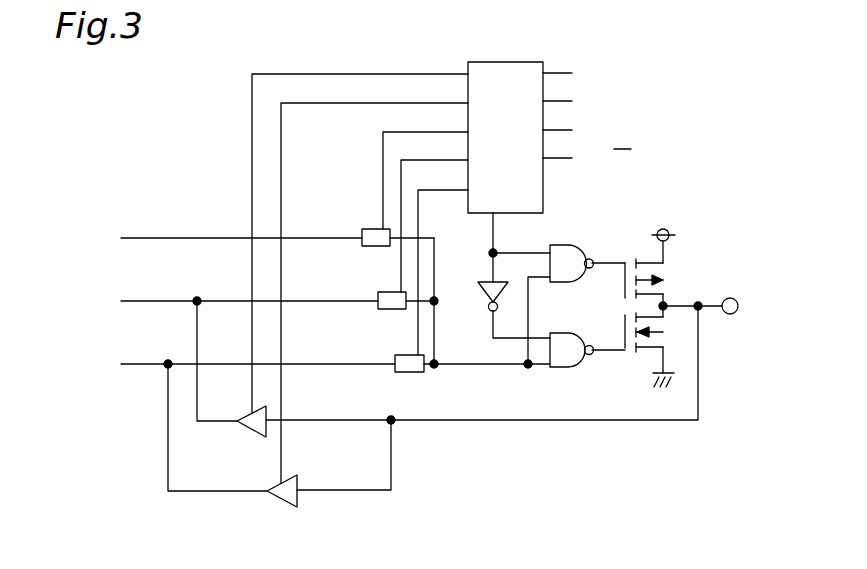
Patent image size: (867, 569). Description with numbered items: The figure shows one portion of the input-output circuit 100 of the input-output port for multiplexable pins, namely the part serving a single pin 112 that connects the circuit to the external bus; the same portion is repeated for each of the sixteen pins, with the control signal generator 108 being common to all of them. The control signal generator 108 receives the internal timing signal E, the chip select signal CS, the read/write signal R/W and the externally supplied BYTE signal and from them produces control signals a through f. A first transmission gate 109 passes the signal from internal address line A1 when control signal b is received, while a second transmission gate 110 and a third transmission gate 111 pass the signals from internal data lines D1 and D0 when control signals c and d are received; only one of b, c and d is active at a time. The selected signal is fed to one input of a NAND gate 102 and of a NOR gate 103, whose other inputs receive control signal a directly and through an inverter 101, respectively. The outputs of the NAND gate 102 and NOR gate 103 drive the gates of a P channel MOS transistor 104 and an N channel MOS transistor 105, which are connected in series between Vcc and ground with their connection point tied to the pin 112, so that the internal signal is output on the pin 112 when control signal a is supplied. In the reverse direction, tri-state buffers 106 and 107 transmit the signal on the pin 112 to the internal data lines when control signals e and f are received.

The input-output circuit 100 is at (287, 61).
The inverter 101 is at (490, 291).
The NAND gate 102 is at (581, 248).
The NOR gate 103 is at (568, 368).
The P channel MOS transistor 104 is at (667, 273).
The N channel MOS transistor 105 is at (667, 338).
The tri-state buffer 106 is at (252, 436).
The tri-state buffer 107 is at (282, 506).
The control signal generator 108 is at (496, 62).
The first transmission gate 109 is at (362, 232).
The second transmission gate 110 is at (378, 295).
The third transmission gate 111 is at (396, 357).
The pin 112 is at (725, 298).